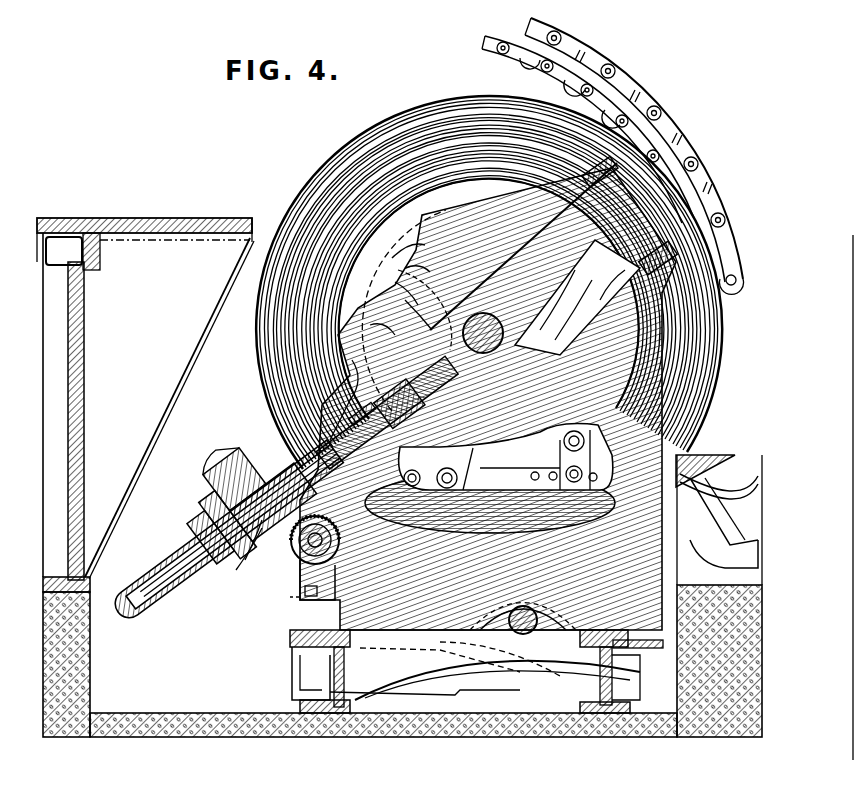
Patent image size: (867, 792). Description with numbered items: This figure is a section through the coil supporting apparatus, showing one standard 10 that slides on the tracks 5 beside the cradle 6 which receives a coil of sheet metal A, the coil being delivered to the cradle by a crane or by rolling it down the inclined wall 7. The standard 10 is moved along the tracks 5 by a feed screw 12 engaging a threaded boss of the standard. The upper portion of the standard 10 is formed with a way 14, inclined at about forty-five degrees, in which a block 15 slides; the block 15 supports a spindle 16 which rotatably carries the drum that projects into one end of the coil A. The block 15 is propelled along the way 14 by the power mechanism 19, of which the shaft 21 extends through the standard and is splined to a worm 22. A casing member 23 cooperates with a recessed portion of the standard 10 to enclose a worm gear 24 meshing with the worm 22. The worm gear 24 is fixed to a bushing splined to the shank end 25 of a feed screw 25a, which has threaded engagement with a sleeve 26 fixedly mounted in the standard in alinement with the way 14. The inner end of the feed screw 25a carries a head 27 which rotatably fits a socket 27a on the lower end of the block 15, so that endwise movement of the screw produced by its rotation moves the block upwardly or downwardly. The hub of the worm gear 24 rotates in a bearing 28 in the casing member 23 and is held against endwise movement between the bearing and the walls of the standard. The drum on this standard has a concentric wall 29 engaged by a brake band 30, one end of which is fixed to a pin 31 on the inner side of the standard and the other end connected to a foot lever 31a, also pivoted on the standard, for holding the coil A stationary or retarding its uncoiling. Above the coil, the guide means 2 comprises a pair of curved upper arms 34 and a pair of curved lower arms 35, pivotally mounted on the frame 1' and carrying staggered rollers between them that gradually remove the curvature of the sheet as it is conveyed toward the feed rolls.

The frame 1' is at (145, 391).
The guide means 2 is at (634, 156).
The tracks 5 is at (228, 432).
The cradle 6 is at (438, 668).
The inclined wall 7 is at (752, 482).
The standard 10 is at (663, 461).
The feed screw 12 is at (470, 617).
The ways 14 is at (600, 295).
The block 15 is at (402, 310).
The spindle 16 is at (395, 283).
The power mechanism 19 is at (225, 503).
The shaft 21 is at (298, 590).
The worm 22 is at (284, 552).
The casing member 23 is at (225, 493).
The worm gear 24 is at (262, 432).
The shank end 25 is at (157, 600).
The feed screw 25a is at (372, 328).
The sleeve 26 is at (358, 384).
The head 27 is at (424, 385).
The socket 27a is at (383, 392).
The bearing 28 is at (252, 573).
The concentric wall 29 is at (392, 258).
The brake band 30 is at (405, 270).
The pin 31 is at (490, 478).
The foot lever 31a is at (497, 478).
The upper arms 34 is at (672, 133).
The lower arms 35 is at (494, 63).
The coil of sheet metal A is at (340, 175).